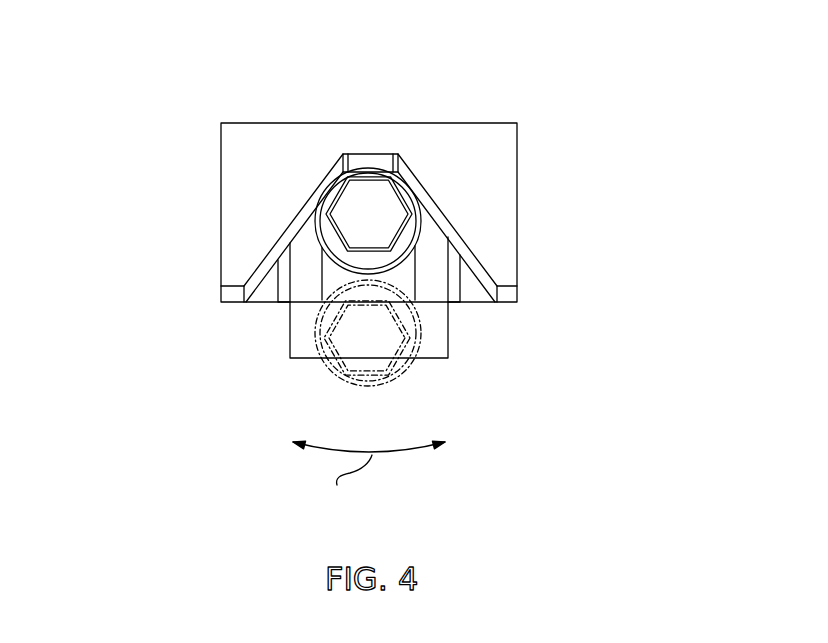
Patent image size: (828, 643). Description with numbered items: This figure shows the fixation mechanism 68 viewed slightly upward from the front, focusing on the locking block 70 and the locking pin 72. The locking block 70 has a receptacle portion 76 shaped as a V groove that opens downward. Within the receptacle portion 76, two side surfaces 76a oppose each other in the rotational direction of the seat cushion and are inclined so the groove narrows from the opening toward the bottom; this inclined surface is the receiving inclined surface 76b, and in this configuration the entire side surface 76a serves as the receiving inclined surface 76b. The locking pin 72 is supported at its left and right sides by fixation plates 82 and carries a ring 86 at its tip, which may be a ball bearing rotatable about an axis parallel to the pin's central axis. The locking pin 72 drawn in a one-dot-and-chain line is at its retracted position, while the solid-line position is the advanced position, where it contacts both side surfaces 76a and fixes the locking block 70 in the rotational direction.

The fixation mechanism 68 is at (455, 85).
The locking block 70 is at (507, 158).
The locking pin 72 is at (389, 158).
The receptacle portion 76 is at (379, 260).
The side surface 76a is at (298, 212).
The receiving inclined surface 76b is at (429, 258).
The fixation plate 82 is at (290, 332).
The ring 86 is at (329, 173).